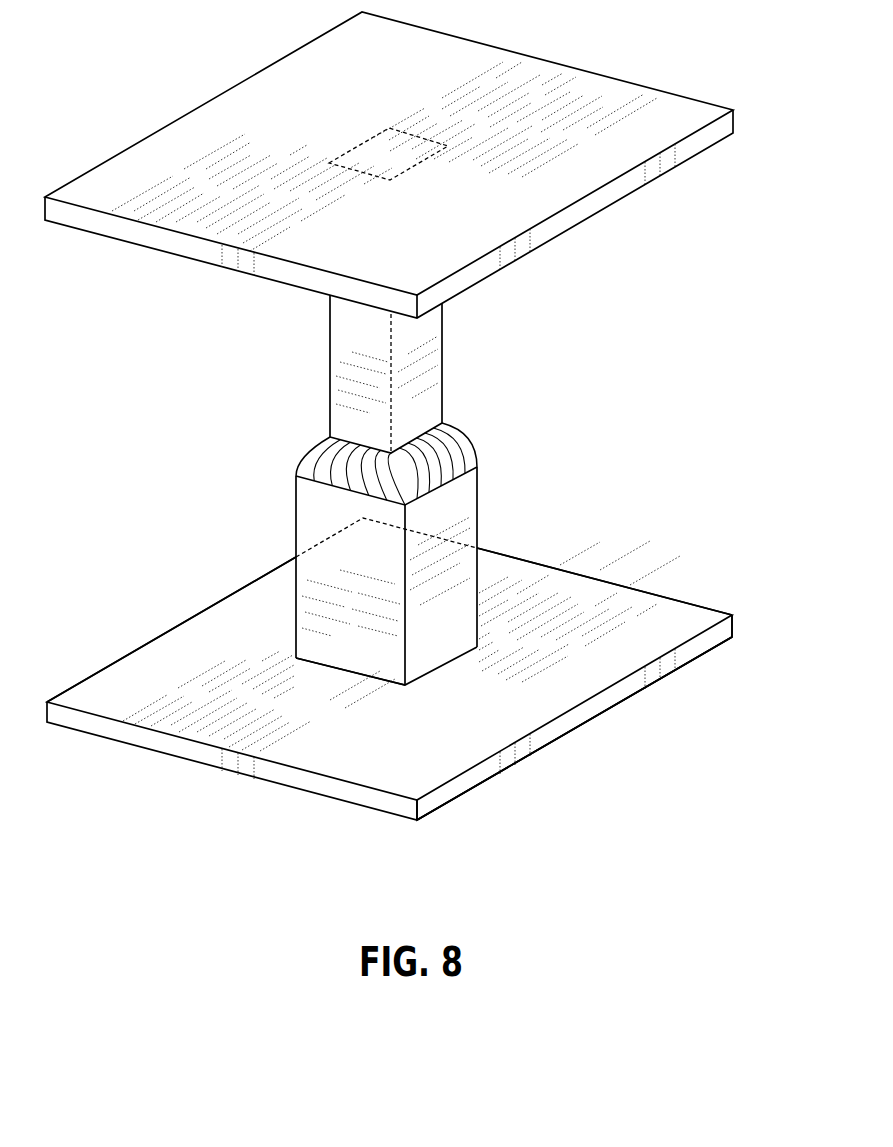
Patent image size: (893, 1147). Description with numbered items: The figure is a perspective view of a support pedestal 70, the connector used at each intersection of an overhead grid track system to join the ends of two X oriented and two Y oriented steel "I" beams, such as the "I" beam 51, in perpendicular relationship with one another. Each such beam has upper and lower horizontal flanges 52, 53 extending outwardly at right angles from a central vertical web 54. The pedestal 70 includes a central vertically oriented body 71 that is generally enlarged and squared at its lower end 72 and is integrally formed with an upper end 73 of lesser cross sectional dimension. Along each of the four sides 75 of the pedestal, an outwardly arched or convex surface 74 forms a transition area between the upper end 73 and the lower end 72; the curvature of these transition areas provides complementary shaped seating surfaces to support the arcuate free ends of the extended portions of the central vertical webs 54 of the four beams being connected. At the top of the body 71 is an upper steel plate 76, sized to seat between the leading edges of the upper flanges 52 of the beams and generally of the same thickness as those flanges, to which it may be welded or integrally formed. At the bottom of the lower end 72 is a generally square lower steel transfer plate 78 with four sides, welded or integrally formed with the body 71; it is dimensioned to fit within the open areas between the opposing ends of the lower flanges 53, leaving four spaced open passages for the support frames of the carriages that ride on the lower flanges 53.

The "I" beam 51 is at (313, 782).
The upper horizontal flange 52 is at (540, 725).
The lower horizontal flange 53 is at (543, 563).
The central vertical web 54 is at (133, 648).
The support pedestal 70 is at (157, 782).
The central vertically oriented body 71 is at (312, 422).
The lower end 72 is at (328, 652).
The upper end 73 is at (338, 368).
The outwardly arched or convex surface 74 is at (453, 450).
The side 75 is at (290, 611).
The upper steel plate 76 is at (698, 108).
The lower steel transfer plate 78 is at (647, 658).